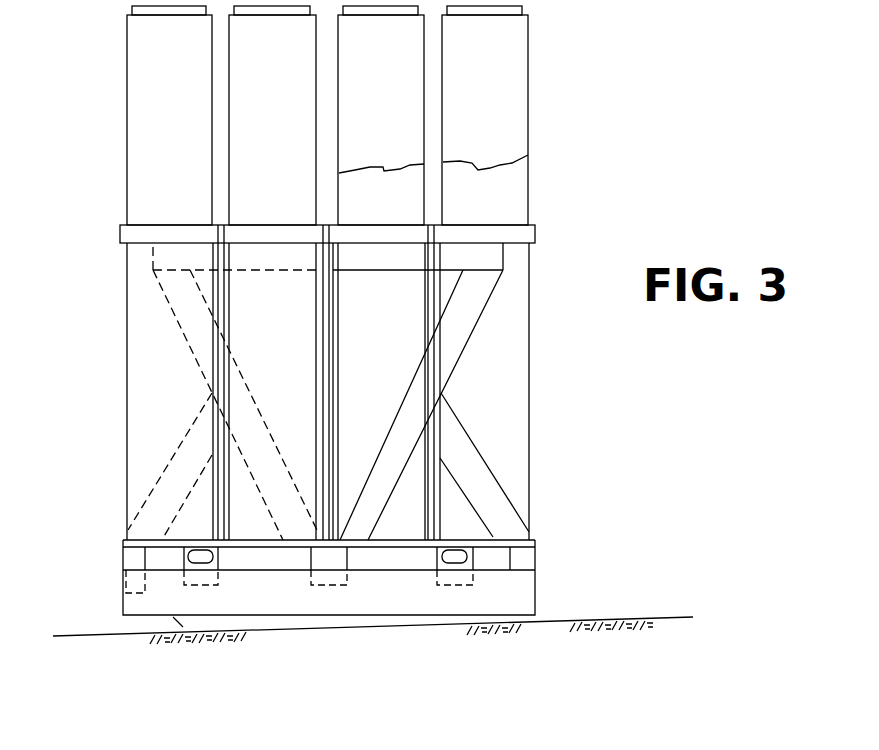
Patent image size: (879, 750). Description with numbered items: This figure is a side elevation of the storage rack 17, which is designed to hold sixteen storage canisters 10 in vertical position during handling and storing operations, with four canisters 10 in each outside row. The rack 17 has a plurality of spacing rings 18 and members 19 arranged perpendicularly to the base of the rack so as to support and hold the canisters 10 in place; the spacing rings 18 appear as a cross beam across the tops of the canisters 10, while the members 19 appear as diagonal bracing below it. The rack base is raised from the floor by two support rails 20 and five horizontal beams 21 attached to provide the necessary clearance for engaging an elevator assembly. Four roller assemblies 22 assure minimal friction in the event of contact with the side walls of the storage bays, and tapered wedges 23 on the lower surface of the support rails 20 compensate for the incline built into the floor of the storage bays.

The storage canisters 10 is at (504, 374).
The storage rack 17 is at (578, 554).
The spacing rings 18 is at (535, 235).
The members 19 is at (440, 327).
The support rails 20 is at (537, 590).
The horizontal beams 21 is at (173, 555).
The roller assemblies 22 is at (213, 557).
The tapered wedges 23 is at (172, 622).